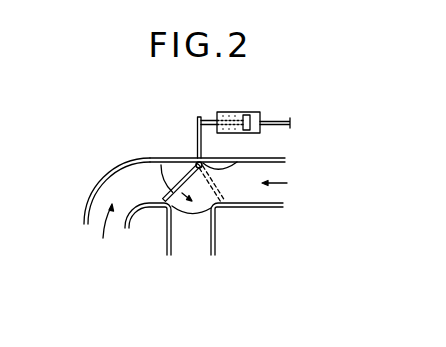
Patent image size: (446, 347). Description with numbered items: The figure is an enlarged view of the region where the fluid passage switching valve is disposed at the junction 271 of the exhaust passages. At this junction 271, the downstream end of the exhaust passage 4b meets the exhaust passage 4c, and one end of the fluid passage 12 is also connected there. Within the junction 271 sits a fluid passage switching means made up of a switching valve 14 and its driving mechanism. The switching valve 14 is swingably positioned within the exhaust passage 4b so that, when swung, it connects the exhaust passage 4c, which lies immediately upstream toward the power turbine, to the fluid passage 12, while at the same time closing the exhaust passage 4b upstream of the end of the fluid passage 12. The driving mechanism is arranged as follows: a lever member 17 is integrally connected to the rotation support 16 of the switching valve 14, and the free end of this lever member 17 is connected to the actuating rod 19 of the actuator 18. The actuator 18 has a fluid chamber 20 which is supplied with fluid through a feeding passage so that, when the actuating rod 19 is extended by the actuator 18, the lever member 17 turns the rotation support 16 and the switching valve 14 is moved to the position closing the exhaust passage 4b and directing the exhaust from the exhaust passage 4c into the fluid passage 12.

The fluid passage 12 is at (106, 189).
The junction 271 is at (152, 157).
The switching valve 14 is at (178, 157).
The rotation support 16 is at (240, 158).
The lever member 17 is at (197, 140).
The actuator 18 is at (237, 112).
The actuating rod 19 is at (218, 112).
The fluid chamber 20 is at (250, 122).
The exhaust passage 4b is at (245, 197).
The exhaust passage 4c is at (215, 237).